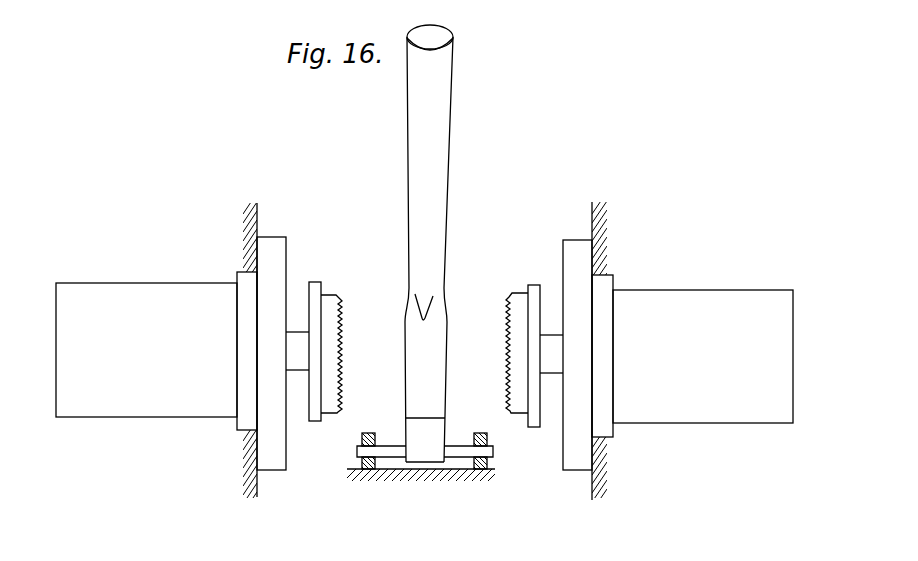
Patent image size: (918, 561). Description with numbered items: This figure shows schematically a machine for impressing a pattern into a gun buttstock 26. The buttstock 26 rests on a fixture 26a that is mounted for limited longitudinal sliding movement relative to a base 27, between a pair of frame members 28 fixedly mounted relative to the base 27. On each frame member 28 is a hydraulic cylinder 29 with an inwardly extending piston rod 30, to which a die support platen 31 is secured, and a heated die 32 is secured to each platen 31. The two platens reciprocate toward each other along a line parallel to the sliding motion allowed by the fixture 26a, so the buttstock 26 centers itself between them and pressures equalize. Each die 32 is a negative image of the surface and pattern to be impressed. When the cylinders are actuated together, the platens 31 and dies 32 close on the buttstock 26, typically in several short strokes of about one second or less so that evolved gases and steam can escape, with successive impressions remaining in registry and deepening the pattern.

The buttstock 26 is at (441, 207).
The fixture 26a is at (443, 445).
The base 27 is at (354, 463).
The frame members 28 is at (255, 219).
The hydraulic cylinder 29 is at (128, 288).
The piston rod 30 is at (292, 340).
The die support platen 31 is at (320, 418).
The heated die 32 is at (337, 296).